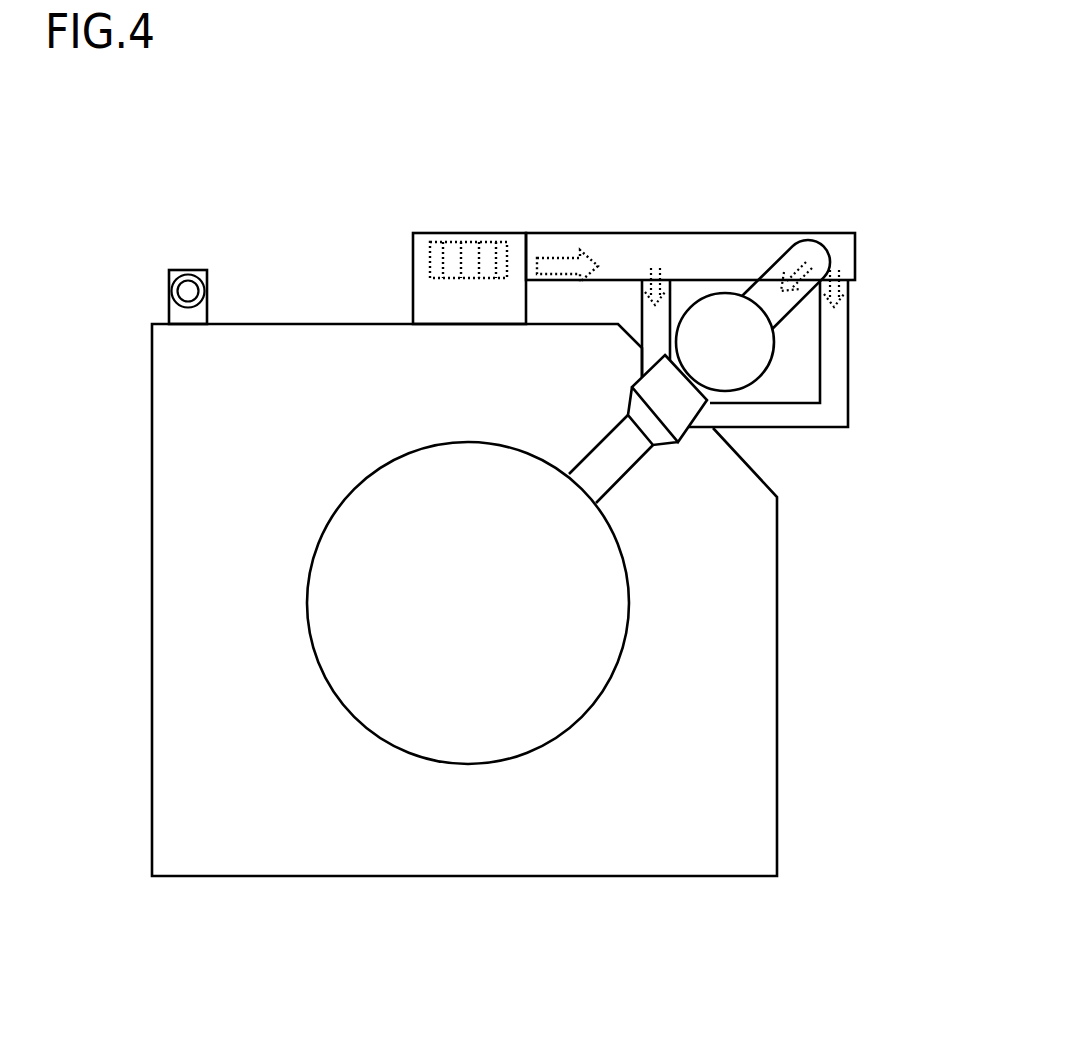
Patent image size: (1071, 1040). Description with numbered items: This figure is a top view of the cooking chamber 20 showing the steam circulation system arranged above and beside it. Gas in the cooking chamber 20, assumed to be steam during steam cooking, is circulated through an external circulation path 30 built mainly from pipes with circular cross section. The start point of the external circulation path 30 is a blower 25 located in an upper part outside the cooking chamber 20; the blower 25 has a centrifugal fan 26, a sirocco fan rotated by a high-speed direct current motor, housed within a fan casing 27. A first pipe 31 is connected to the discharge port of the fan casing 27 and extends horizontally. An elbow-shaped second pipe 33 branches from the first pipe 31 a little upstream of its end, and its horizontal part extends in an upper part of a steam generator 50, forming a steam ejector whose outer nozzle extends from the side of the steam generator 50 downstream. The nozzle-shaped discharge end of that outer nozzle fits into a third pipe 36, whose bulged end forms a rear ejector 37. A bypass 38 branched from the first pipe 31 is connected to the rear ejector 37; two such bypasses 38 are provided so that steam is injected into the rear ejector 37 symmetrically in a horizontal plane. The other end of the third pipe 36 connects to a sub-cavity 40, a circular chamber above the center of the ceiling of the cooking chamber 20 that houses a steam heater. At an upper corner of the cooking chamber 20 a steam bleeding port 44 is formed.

The cooking chamber 20 is at (150, 424).
The blower 25 is at (459, 187).
The centrifugal fan 26 is at (430, 252).
The fan casing 27 is at (413, 292).
The external circulation path 30 is at (689, 178).
The first pipe 31 is at (616, 232).
The second pipe 33 is at (767, 252).
The third pipe 36 is at (600, 442).
The rear ejector 37 is at (619, 390).
The bypass 38 is at (642, 298).
The sub-cavity 40 is at (320, 523).
The steam bleeding port 44 is at (186, 288).
The steam generator 50 is at (794, 360).